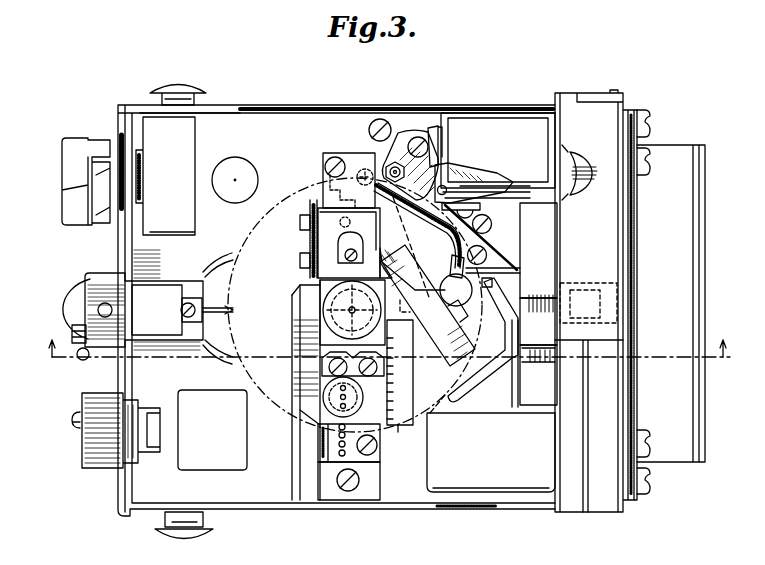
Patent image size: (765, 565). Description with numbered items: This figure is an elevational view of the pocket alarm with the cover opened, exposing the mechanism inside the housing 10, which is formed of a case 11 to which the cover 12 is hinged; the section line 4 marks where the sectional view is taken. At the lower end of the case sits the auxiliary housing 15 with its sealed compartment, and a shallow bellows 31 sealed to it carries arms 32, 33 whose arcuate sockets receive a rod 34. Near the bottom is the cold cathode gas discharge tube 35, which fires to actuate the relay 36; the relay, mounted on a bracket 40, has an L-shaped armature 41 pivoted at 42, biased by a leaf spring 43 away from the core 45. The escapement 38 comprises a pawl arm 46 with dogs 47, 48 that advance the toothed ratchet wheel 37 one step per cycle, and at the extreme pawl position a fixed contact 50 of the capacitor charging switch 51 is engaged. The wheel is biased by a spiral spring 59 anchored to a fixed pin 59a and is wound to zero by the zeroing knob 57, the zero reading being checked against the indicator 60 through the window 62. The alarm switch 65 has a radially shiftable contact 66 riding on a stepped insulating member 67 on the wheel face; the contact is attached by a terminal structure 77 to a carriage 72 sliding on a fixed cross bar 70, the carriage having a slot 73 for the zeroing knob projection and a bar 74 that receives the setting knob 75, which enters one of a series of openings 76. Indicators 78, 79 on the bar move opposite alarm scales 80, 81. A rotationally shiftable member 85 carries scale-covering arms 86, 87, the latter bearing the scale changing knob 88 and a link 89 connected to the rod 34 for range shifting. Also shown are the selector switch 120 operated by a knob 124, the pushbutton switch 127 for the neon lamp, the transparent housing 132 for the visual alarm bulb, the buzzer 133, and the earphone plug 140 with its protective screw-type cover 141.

The section line 4- 4 is at (389, 353).
The housing 10 is at (275, 97).
The case 11 is at (233, 106).
The cover 12 is at (568, 98).
The auxiliary housing 15 is at (718, 221).
The shallow bellows 31 is at (520, 382).
The arm 32 is at (512, 326).
The arm 33 is at (478, 372).
The rod 34 is at (493, 287).
The cold cathode gas discharge tube 35 is at (440, 470).
The relay 36 is at (492, 115).
The toothed ratchet wheel 37 is at (442, 400).
The escapement 38 is at (492, 226).
The bracket 40 is at (510, 212).
The L-shaped armature 41 is at (464, 163).
The pivot 42 is at (447, 188).
The leaf spring 43 is at (492, 188).
The core 45 is at (436, 125).
The pawl arm 46 is at (452, 262).
The dog 47 is at (362, 170).
The dog 48 is at (488, 252).
The fixed contact 50 is at (392, 140).
The capacitor charging switch 51 is at (379, 153).
The zeroing knob 57 is at (322, 295).
The spiral spring 59 is at (372, 240).
The fixed pin 59a is at (338, 250).
The indicator 60 is at (210, 280).
The window 62 is at (210, 345).
The alarm switch 65 is at (404, 263).
The radially shiftable contact 66 is at (323, 175).
The insulating member 67 is at (402, 254).
The fixed cross bar 70 is at (330, 462).
The carriage 72 is at (300, 222).
The slot 73 is at (292, 352).
The bar 74 is at (322, 395).
The setting knob 75 is at (295, 419).
The openings 76 is at (335, 444).
The terminal structure 77 is at (340, 220).
The indicator 78 is at (320, 368).
The indicator 79 is at (412, 368).
The alarm scale 80 is at (300, 296).
The alarm scale 81 is at (400, 428).
The rotationally shiftable member 85 is at (294, 326).
The scale-covering arm 86 is at (298, 335).
The scale-covering arm 87 is at (447, 323).
The scale changing knob 88 is at (466, 298).
The link 89 is at (520, 270).
The selector switch 120 is at (147, 111).
The knob 124 is at (72, 197).
The pushbutton switch 127 is at (233, 158).
The transparent housing 132 is at (65, 302).
The buzzer 133 is at (210, 460).
The plug 140 is at (120, 460).
The protective screw-type cover 141 is at (85, 455).